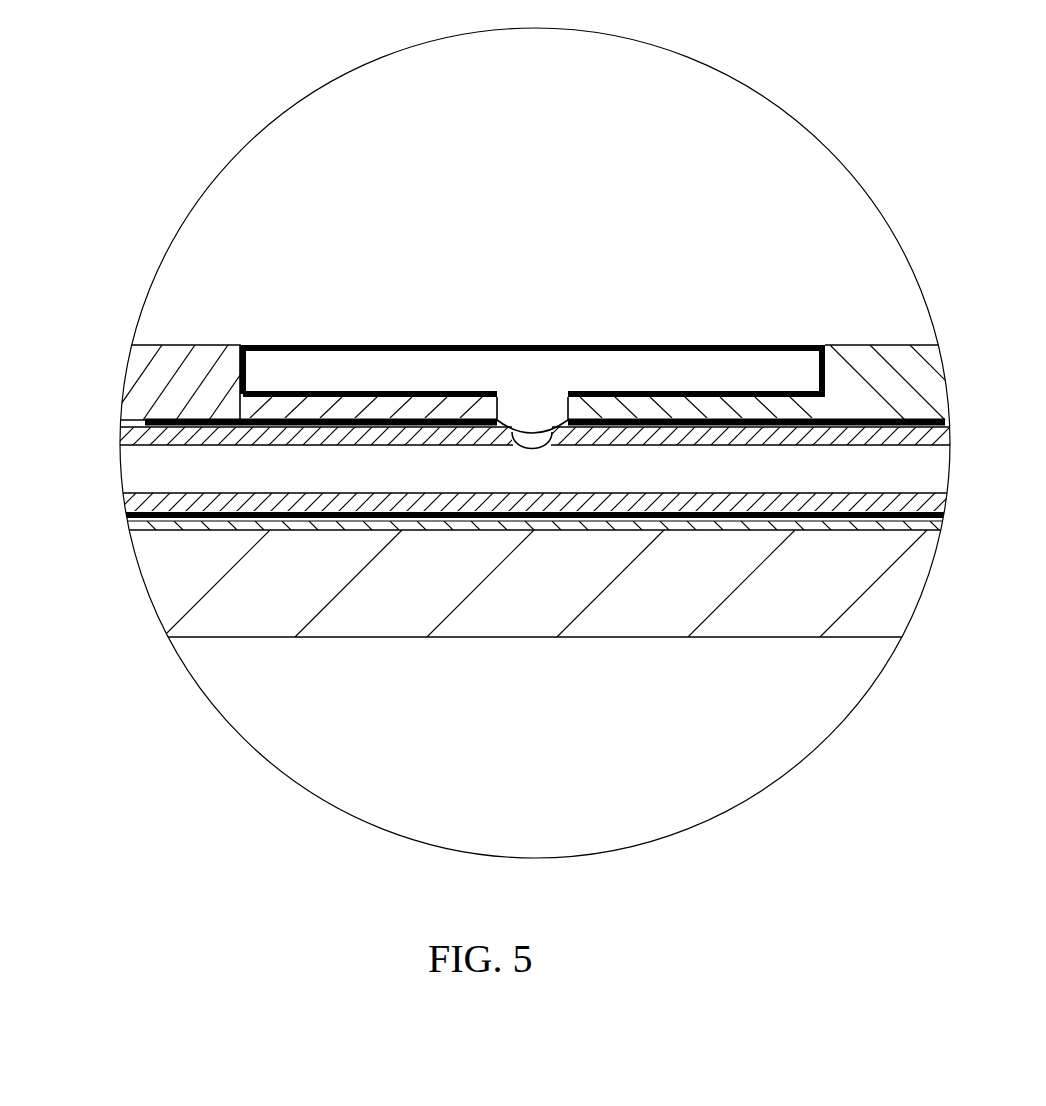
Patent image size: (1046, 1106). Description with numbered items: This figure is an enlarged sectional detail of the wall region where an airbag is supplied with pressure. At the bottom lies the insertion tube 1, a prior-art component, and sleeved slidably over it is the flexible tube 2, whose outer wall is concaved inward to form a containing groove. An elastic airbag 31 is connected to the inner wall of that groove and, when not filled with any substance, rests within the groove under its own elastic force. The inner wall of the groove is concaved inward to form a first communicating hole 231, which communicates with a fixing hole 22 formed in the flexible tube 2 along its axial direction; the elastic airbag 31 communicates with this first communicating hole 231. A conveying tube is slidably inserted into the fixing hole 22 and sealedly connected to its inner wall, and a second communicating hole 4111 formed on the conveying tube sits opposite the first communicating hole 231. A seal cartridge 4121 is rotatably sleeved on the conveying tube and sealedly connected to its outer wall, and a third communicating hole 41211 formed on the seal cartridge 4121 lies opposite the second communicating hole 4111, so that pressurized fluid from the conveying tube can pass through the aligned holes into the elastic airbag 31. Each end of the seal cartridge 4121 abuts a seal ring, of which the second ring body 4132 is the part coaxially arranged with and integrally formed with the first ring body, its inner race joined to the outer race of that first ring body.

The insertion tube 1 is at (635, 618).
The flexible tube 2 is at (200, 358).
The fixing hole 22 is at (851, 419).
The elastic airbag 31 is at (737, 345).
The first communicating hole 231 is at (533, 408).
The third communicating hole 41211 is at (497, 420).
The second communicating hole 4111 is at (530, 447).
The seal cartridge 4121 is at (288, 517).
The second ring body 4132 is at (133, 490).